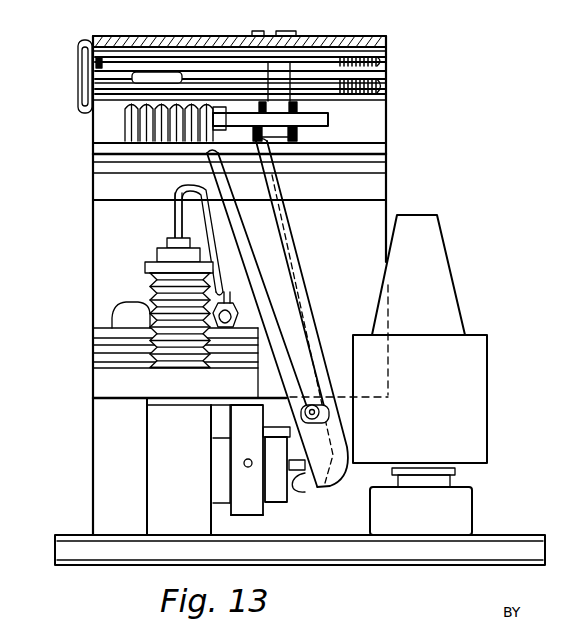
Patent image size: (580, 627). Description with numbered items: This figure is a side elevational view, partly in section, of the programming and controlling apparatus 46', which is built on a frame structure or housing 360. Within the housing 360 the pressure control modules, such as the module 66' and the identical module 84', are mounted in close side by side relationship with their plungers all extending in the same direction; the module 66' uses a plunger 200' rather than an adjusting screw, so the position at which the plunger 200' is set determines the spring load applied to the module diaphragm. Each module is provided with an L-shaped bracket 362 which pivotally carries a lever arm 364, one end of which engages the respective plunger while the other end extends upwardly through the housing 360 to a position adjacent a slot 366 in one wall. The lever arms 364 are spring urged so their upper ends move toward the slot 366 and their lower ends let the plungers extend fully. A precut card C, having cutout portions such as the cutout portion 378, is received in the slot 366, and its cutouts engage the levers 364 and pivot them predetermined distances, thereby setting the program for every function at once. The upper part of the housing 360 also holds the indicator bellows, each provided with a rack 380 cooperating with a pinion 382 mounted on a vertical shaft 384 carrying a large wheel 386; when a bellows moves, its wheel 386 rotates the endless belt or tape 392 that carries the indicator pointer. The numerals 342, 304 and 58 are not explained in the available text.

The vertical shaft 384 is at (290, 52).
The large wheel 386 is at (384, 42).
The endless belt or tape 392 is at (385, 57).
The pinion 382 is at (312, 104).
The rack 380 is at (323, 128).
The precut card C is at (354, 152).
The programming and controlling apparatus 46' is at (424, 149).
The bellows 342 is at (142, 144).
The slot 366 is at (92, 160).
The cutout portion 378 is at (179, 176).
The lever arm 364 is at (290, 241).
The bellows actuator 304 is at (132, 300).
The platen stack 58 is at (110, 328).
The module 84' is at (412, 375).
The plunger 200' is at (324, 482).
The pressure control module or position switch means 66' is at (280, 468).
The L-shaped bracket 362 is at (250, 516).
The frame structure or housing 360 is at (500, 533).